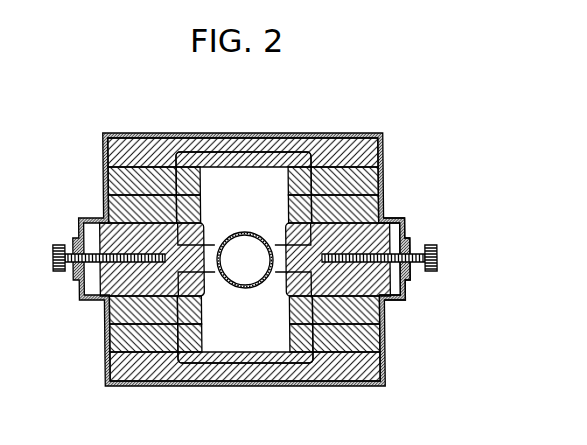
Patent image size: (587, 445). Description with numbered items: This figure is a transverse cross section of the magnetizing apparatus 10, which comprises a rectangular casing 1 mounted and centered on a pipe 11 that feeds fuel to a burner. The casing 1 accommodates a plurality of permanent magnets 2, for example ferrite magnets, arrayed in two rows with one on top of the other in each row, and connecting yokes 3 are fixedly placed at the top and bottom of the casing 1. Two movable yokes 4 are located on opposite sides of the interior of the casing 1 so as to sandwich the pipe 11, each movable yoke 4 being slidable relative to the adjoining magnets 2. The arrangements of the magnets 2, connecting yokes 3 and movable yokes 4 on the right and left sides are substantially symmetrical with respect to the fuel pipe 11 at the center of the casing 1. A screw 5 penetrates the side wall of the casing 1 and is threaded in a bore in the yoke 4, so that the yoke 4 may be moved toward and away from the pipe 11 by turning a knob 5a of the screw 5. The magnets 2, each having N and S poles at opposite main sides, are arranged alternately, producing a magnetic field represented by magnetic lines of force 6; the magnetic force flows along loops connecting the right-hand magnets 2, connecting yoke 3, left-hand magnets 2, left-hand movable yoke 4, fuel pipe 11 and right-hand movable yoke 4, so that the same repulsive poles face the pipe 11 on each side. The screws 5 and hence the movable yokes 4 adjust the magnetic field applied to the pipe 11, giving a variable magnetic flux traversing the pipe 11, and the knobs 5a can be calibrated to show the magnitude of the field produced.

The casing 1 is at (388, 152).
The permanent magnets 2 is at (105, 216).
The connecting yokes 3 is at (118, 150).
The movable yokes 4 is at (401, 216).
The screw 5 is at (418, 249).
The knob 5a is at (431, 270).
The magnetic lines of force 6 is at (265, 133).
The magnetizing apparatus 10 is at (304, 122).
The pipe 11 is at (235, 231).